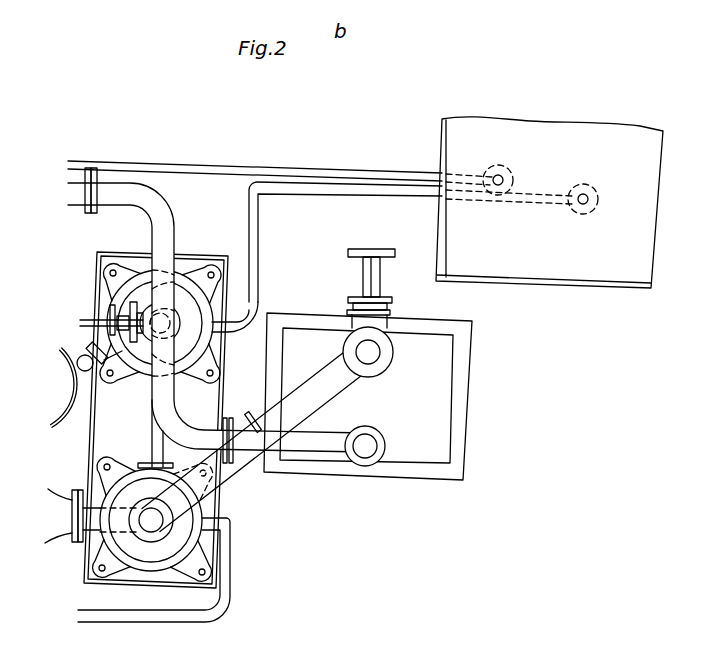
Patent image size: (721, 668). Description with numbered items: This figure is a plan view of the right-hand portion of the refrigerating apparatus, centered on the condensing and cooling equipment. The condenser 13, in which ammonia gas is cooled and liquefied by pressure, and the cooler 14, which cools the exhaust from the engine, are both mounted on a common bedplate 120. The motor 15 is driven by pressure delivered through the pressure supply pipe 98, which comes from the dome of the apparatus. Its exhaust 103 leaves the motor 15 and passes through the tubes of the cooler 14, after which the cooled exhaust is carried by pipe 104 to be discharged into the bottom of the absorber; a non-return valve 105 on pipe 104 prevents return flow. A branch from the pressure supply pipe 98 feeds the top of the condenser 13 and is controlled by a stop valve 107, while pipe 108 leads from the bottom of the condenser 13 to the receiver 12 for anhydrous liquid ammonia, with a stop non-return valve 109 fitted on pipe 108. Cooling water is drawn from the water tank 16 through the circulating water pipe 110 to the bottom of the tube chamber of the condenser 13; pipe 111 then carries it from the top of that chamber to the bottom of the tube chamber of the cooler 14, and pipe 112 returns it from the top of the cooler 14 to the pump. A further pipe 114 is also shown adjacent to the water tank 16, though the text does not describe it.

The receiver for anhydrous liquid ammonia 12 is at (61, 387).
The condenser 13 is at (160, 324).
The cooler 14 is at (153, 519).
The motor 15 is at (368, 364).
The water tank 16 is at (549, 202).
The pressure supply pipe 98 is at (216, 315).
The exhaust 103 is at (259, 436).
The pipe 104 is at (97, 533).
The non-return valve 105 is at (84, 516).
The stop valve 107 is at (110, 313).
The pipe 108 is at (116, 331).
The stop non-return valve 109 is at (92, 352).
The circulating water pipe 110 is at (358, 196).
The pipe 111 is at (152, 443).
The pipe 112 is at (182, 627).
The pipe 114 is at (280, 166).
The bedplate 120 is at (156, 420).